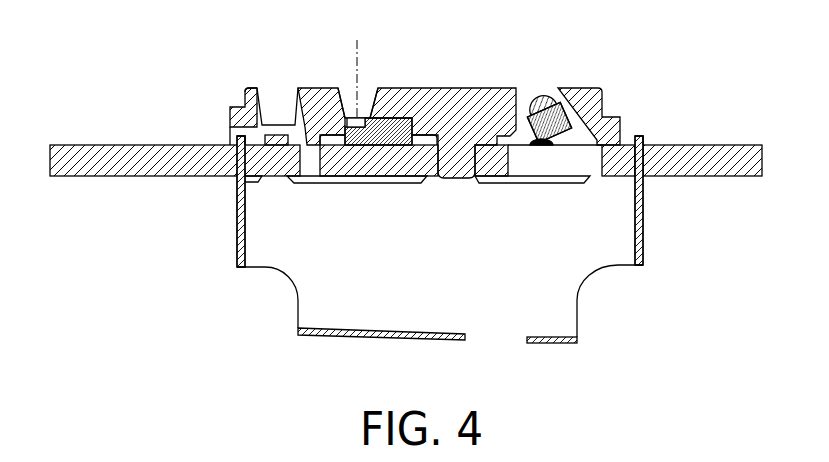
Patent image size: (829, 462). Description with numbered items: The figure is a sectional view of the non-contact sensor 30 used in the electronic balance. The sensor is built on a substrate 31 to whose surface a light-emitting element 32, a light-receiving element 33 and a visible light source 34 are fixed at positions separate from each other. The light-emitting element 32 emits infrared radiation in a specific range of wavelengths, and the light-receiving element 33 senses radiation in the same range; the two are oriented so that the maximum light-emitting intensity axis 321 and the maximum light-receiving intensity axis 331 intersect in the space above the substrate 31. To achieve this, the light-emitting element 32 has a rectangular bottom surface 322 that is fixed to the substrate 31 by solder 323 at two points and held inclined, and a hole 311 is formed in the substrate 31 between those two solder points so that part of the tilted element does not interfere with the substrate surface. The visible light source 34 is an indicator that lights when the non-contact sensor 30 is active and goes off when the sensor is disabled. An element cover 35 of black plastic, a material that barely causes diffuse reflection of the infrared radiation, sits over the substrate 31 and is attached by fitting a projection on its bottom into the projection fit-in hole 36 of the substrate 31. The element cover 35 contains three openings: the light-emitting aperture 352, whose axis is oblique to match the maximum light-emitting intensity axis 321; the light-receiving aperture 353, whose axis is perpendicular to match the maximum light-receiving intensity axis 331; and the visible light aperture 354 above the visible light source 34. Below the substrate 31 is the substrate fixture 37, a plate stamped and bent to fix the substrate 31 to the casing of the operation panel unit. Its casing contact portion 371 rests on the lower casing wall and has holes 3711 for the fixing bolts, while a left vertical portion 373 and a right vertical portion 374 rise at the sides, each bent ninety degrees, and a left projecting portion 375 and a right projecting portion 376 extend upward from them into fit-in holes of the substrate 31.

The non-contact sensor 30 is at (408, 192).
The substrate 31 is at (738, 145).
The hole 311 is at (556, 154).
The light-emitting element 32 is at (586, 71).
The maximum light-emitting intensity axis 321 is at (532, 87).
The bottom surface 322 is at (600, 138).
The solder 323 is at (535, 148).
The light-receiving element 33 is at (404, 80).
The maximum light-receiving intensity axis 331 is at (358, 50).
The visible light source 34 is at (243, 95).
The element cover 35 is at (415, 122).
The light-emitting aperture 352 is at (555, 98).
The light-receiving aperture 353 is at (352, 108).
The visible light aperture 354 is at (280, 108).
The projection fit-in hole 36 is at (452, 182).
The substrate fixture 37 is at (449, 229).
The casing contact portion 371 is at (333, 331).
The holes 3711 is at (512, 338).
The left vertical portion 373 is at (235, 233).
The right vertical portion 374 is at (643, 232).
The left projecting portion 375 is at (232, 145).
The right projecting portion 376 is at (645, 140).